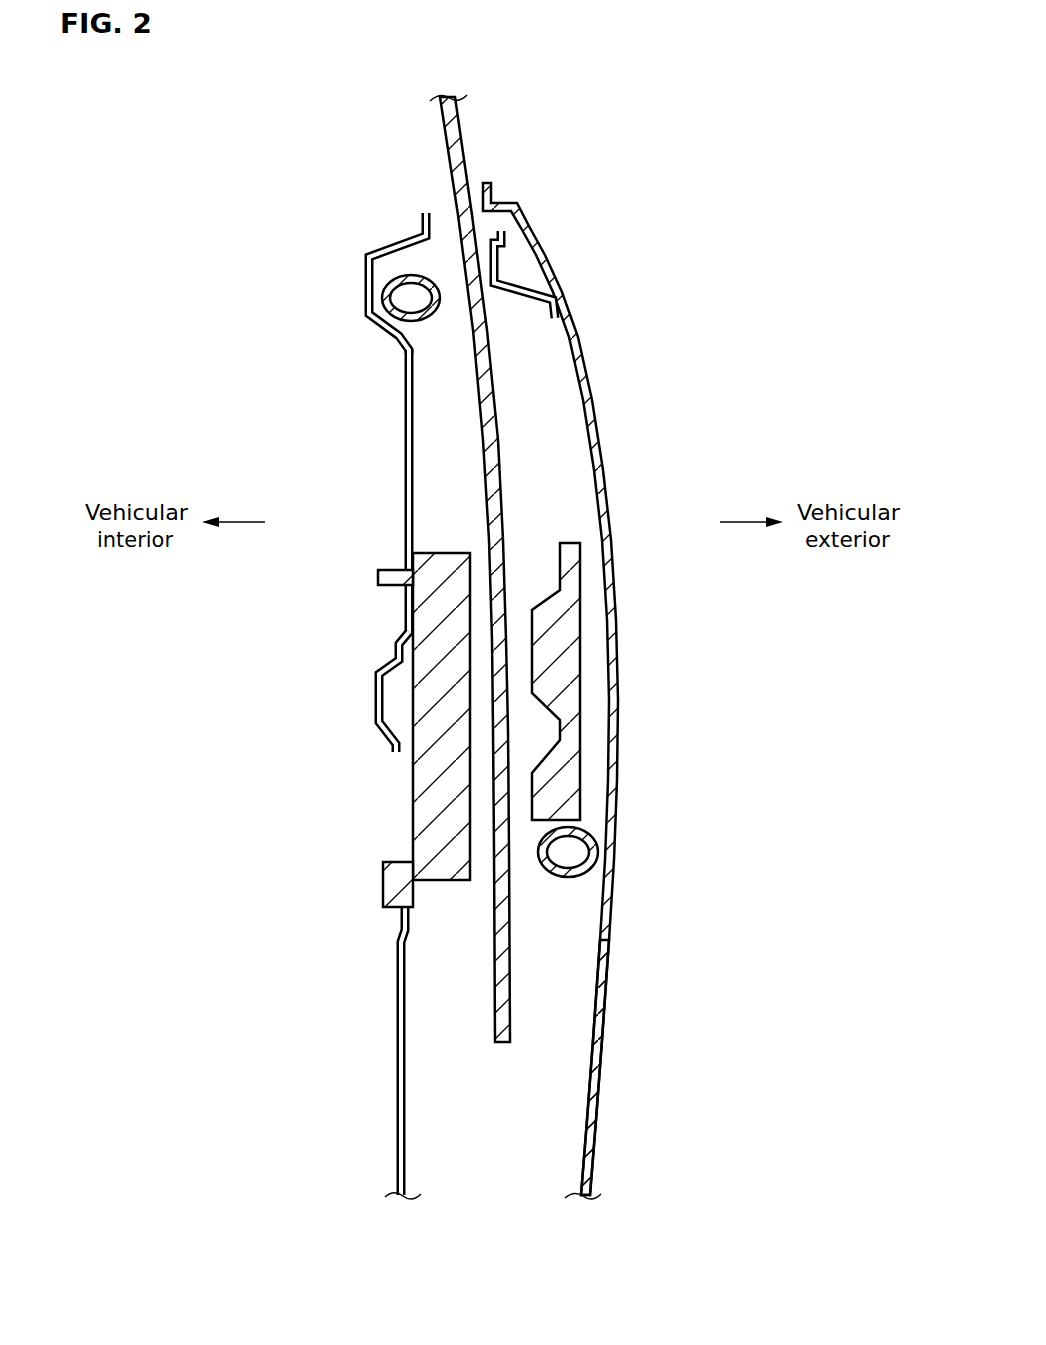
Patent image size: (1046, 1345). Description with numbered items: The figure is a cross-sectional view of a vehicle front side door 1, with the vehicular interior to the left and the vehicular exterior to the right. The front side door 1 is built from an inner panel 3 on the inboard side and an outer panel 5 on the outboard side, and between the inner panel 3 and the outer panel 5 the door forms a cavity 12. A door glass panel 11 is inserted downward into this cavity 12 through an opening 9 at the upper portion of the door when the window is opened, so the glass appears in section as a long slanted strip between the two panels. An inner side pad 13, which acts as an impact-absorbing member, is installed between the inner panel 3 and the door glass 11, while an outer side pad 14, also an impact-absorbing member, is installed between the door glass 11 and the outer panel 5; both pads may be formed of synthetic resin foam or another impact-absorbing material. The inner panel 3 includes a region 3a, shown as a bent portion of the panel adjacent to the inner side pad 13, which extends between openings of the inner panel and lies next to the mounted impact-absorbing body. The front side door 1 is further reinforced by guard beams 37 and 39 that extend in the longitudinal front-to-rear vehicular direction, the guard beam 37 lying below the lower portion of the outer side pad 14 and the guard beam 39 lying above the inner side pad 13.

The front side door 1 is at (600, 355).
The inner panel 3 is at (398, 1027).
The region 3a is at (370, 690).
The outer panel 5 is at (611, 942).
The opening 9 is at (440, 222).
The door glass panel 11 is at (465, 138).
The cavity 12 is at (517, 1144).
The inner side pad 13 is at (411, 800).
The outer side pad 14 is at (581, 672).
The guard beam 37 is at (570, 879).
The guard beam 39 is at (428, 323).